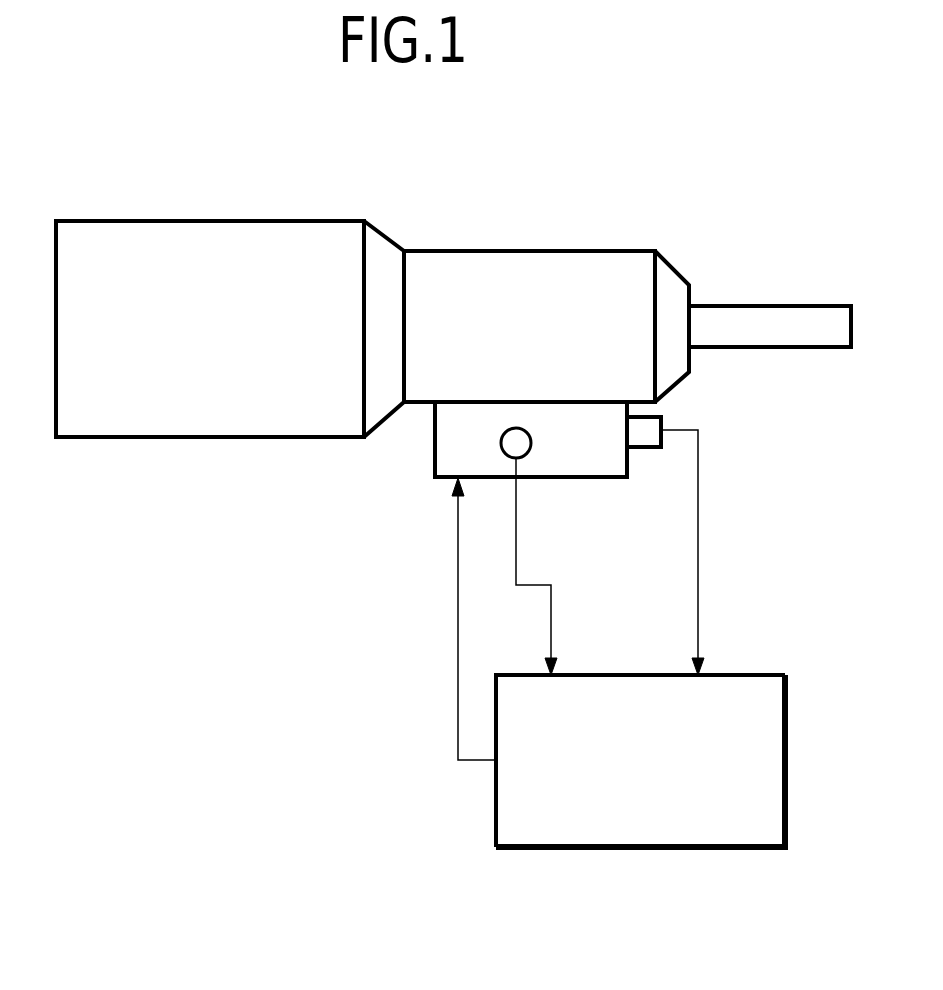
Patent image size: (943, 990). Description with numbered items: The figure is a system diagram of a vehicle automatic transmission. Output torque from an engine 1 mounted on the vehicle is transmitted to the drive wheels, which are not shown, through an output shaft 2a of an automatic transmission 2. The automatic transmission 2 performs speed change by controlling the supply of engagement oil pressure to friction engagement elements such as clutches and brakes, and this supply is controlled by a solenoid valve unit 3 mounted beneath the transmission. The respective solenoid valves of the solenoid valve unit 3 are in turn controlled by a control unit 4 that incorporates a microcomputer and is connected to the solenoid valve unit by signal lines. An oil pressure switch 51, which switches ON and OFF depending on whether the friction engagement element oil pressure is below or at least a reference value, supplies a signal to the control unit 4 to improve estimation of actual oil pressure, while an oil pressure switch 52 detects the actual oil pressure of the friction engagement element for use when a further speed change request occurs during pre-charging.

The engine 1 is at (190, 221).
The automatic transmission 2 is at (553, 251).
The output shaft 2a is at (775, 306).
The solenoid valve unit 3 is at (435, 450).
The control unit 4 is at (752, 675).
The oil pressure switch 51 is at (666, 420).
The oil pressure switch 52 is at (529, 452).